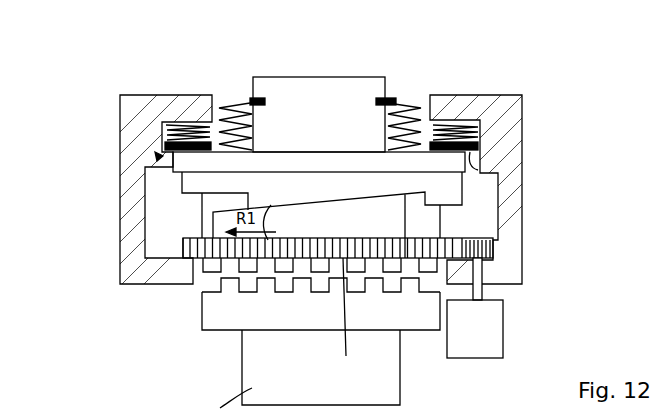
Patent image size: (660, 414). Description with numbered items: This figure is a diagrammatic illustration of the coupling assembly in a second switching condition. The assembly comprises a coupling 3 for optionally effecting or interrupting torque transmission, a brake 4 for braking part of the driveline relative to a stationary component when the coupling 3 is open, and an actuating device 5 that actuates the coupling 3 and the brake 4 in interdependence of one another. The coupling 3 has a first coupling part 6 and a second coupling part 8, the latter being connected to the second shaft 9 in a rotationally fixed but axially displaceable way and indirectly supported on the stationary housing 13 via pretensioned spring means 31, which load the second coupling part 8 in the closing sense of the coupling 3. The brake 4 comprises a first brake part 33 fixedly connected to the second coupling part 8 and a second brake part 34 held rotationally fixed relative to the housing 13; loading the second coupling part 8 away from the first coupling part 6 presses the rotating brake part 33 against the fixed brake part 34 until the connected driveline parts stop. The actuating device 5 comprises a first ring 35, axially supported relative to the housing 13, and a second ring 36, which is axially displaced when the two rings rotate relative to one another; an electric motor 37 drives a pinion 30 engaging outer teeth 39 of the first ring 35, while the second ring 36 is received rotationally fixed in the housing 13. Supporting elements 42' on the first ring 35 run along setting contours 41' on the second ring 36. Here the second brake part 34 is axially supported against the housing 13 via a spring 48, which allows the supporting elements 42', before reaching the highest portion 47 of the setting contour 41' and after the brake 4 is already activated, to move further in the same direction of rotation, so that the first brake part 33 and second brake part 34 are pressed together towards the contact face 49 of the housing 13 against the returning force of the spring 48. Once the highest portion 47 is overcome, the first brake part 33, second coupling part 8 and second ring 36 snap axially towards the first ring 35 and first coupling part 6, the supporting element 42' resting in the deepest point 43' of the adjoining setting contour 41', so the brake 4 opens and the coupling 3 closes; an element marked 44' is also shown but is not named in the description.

The coupling 3 is at (445, 300).
The brake 4 is at (162, 157).
The actuating device 5 is at (492, 270).
The first coupling part 6 is at (210, 322).
The second coupling part 8 is at (212, 296).
The second shaft 9 is at (359, 88).
The housing 13 is at (463, 106).
The pinion 30 is at (494, 252).
The spring means 31 is at (234, 108).
The first brake part 33 is at (422, 140).
The second brake part 34 is at (476, 172).
The first ring 35 is at (452, 237).
The second ring 36 is at (462, 193).
The electric motor 37 is at (504, 339).
The outer teeth 39 is at (184, 249).
The setting contour 41' is at (402, 299).
The supporting elements 42' is at (296, 222).
The deepest point 43' is at (423, 302).
The guide element 44' is at (351, 319).
The highest portion 47 is at (264, 268).
The spring 48 is at (470, 126).
The contact face 49 is at (166, 133).